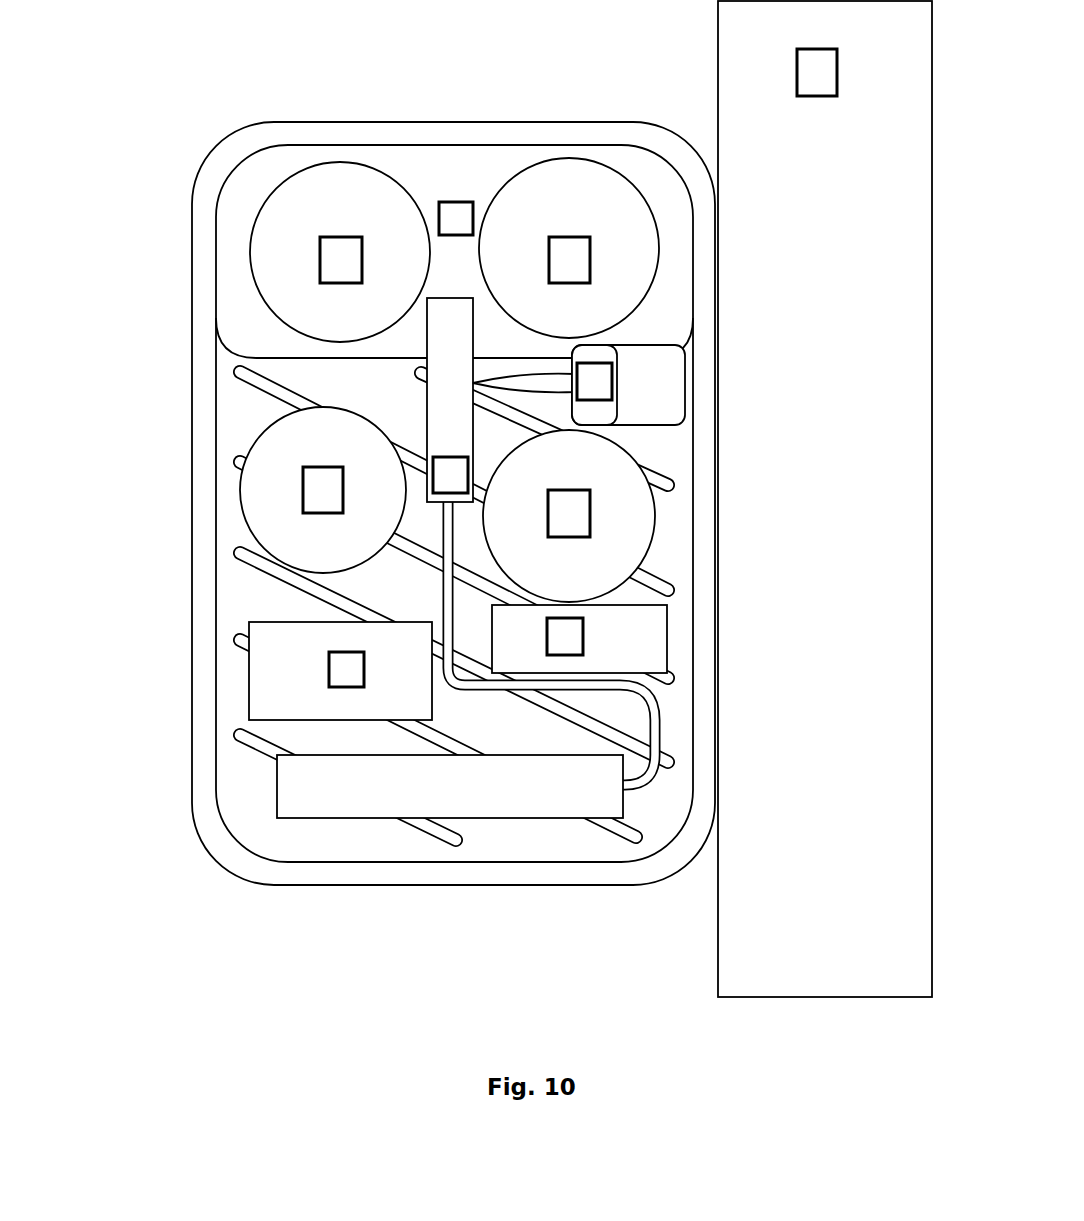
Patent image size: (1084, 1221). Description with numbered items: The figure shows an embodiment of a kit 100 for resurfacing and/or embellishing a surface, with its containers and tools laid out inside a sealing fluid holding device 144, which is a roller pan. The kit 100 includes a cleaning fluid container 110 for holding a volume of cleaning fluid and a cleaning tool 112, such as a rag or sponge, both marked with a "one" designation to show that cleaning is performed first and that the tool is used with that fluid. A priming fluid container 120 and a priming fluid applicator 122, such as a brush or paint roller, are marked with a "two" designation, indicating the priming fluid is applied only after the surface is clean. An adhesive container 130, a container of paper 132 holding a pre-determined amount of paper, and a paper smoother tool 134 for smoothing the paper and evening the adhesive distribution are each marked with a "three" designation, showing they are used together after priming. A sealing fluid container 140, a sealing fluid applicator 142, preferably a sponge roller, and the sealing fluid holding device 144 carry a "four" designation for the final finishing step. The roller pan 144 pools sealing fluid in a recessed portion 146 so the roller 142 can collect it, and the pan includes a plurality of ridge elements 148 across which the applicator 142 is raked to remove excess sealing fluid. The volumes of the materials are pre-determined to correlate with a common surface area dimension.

The kit 100 is at (465, 446).
The cleaning fluid container 110 is at (331, 205).
The cleaning tool 112 is at (296, 664).
The priming fluid container 120 is at (577, 212).
The priming fluid applicator 122 is at (661, 381).
The adhesive container 130 is at (259, 460).
The container of paper 132 is at (706, 911).
The paper smoother tool 134 is at (631, 640).
The sealing fluid container 140 is at (621, 477).
The sealing fluid applicator 142 is at (303, 784).
The sealing fluid holding device 144 is at (204, 142).
The recessed portion 146 is at (469, 175).
The ridge elements 148 is at (225, 365).